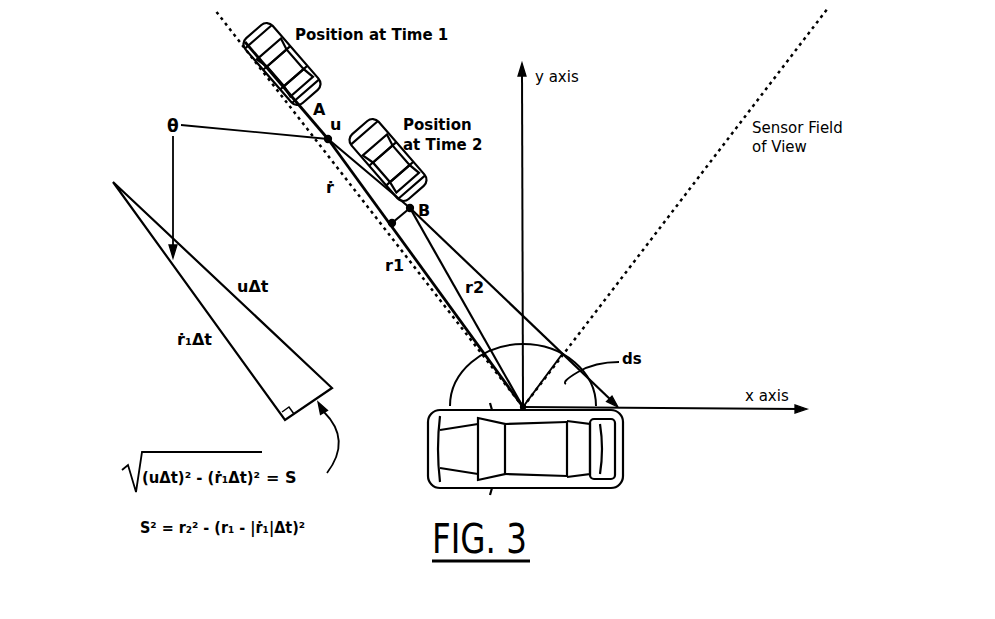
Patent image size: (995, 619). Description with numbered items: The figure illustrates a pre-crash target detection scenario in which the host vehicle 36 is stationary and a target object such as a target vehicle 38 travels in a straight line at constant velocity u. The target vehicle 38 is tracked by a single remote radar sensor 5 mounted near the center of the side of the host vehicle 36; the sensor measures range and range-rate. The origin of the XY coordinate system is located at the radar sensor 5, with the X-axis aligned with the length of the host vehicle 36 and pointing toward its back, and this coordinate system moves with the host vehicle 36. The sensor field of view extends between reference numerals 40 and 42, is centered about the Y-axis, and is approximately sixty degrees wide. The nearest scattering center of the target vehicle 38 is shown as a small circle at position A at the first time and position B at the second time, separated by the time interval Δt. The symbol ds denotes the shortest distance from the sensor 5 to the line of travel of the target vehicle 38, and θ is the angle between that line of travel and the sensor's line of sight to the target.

The remote radar sensor 5 is at (523, 411).
The host vehicle 36 is at (622, 485).
The target vehicle 38 is at (322, 80).
The sensor field of view boundary 40 is at (454, 319).
The sensor field of view boundary 42 is at (633, 263).